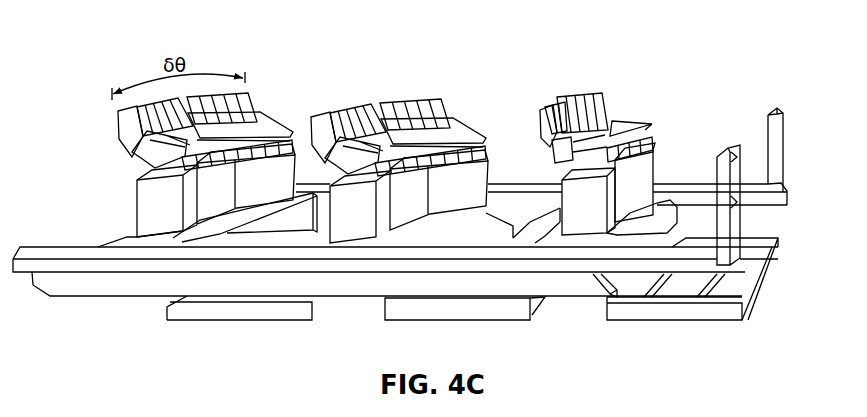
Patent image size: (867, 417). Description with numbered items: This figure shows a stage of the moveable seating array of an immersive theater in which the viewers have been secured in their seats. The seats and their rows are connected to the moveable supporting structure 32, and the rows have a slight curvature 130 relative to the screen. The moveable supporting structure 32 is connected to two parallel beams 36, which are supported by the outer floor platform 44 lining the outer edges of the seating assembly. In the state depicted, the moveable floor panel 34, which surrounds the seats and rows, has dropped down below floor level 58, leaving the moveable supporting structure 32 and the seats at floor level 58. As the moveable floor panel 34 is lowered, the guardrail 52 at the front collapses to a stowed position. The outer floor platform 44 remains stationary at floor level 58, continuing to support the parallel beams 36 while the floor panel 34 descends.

The slight curvature (δθ) 130 is at (172, 50).
The moveable supporting structure 32 is at (132, 236).
The parallel beams 36 is at (142, 283).
The outer floor platform 44 is at (523, 259).
The floor level 58 is at (673, 183).
The moveable floor panel 34 is at (746, 276).
The guardrail 52 is at (652, 301).